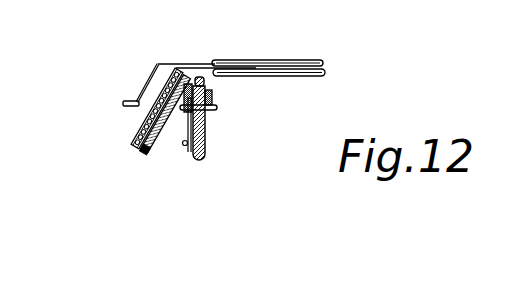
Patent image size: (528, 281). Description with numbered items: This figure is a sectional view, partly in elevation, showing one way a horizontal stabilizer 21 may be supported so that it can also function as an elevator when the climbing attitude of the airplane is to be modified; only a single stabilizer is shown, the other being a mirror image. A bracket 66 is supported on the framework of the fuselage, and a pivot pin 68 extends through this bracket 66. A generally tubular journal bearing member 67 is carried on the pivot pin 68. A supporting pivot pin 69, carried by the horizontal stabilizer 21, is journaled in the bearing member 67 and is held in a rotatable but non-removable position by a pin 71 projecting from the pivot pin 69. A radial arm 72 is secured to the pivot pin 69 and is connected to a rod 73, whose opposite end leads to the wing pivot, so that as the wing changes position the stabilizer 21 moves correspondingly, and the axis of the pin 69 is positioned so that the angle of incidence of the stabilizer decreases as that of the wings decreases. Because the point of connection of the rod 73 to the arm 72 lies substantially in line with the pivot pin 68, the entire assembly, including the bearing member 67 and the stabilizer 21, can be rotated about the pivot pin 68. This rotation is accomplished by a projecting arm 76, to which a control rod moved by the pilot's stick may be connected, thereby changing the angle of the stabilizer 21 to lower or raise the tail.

The horizontal stabilizer 21 is at (229, 61).
The bracket 66 is at (207, 147).
The journal bearing member 67 is at (139, 124).
The pivot pin 68 is at (217, 108).
The supporting pivot pin 69 is at (140, 153).
The pin 71 is at (147, 156).
The radial arm 72 is at (149, 80).
The rod 73 is at (123, 102).
The projecting arm 76 is at (183, 147).